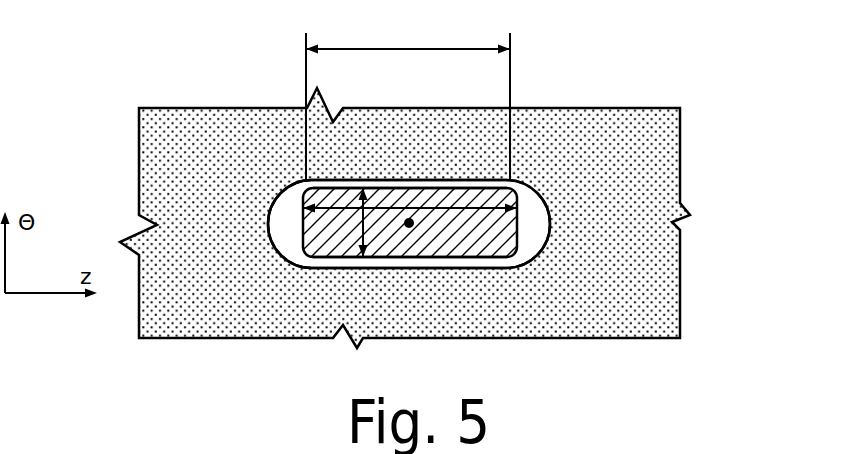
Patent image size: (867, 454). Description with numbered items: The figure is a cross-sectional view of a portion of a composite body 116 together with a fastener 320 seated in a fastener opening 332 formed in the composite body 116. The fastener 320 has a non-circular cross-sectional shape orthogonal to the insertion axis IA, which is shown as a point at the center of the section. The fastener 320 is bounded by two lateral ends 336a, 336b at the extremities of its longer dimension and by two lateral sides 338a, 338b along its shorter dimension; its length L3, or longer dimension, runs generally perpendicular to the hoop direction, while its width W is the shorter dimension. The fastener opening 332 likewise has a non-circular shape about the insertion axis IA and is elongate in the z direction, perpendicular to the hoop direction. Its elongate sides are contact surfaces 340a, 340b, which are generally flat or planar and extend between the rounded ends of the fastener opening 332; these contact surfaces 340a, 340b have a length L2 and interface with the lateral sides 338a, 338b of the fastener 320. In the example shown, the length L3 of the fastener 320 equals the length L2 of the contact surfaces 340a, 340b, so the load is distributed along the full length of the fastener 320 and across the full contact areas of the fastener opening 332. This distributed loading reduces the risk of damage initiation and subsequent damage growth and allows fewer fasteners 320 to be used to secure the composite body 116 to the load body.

The composite body 116 is at (175, 163).
The fastener 320 is at (492, 234).
The fastener opening 332 is at (560, 208).
The lateral end 336a is at (302, 222).
The lateral end 336b is at (518, 222).
The lateral side 338a is at (378, 190).
The lateral side 338b is at (372, 262).
The contact surface 340a is at (412, 180).
The contact surface 340b is at (493, 270).
The length of contact surfaces L2 is at (422, 49).
The length of fastener L3 is at (460, 202).
The width of fastener W is at (358, 232).
The insertion axis IA is at (409, 223).